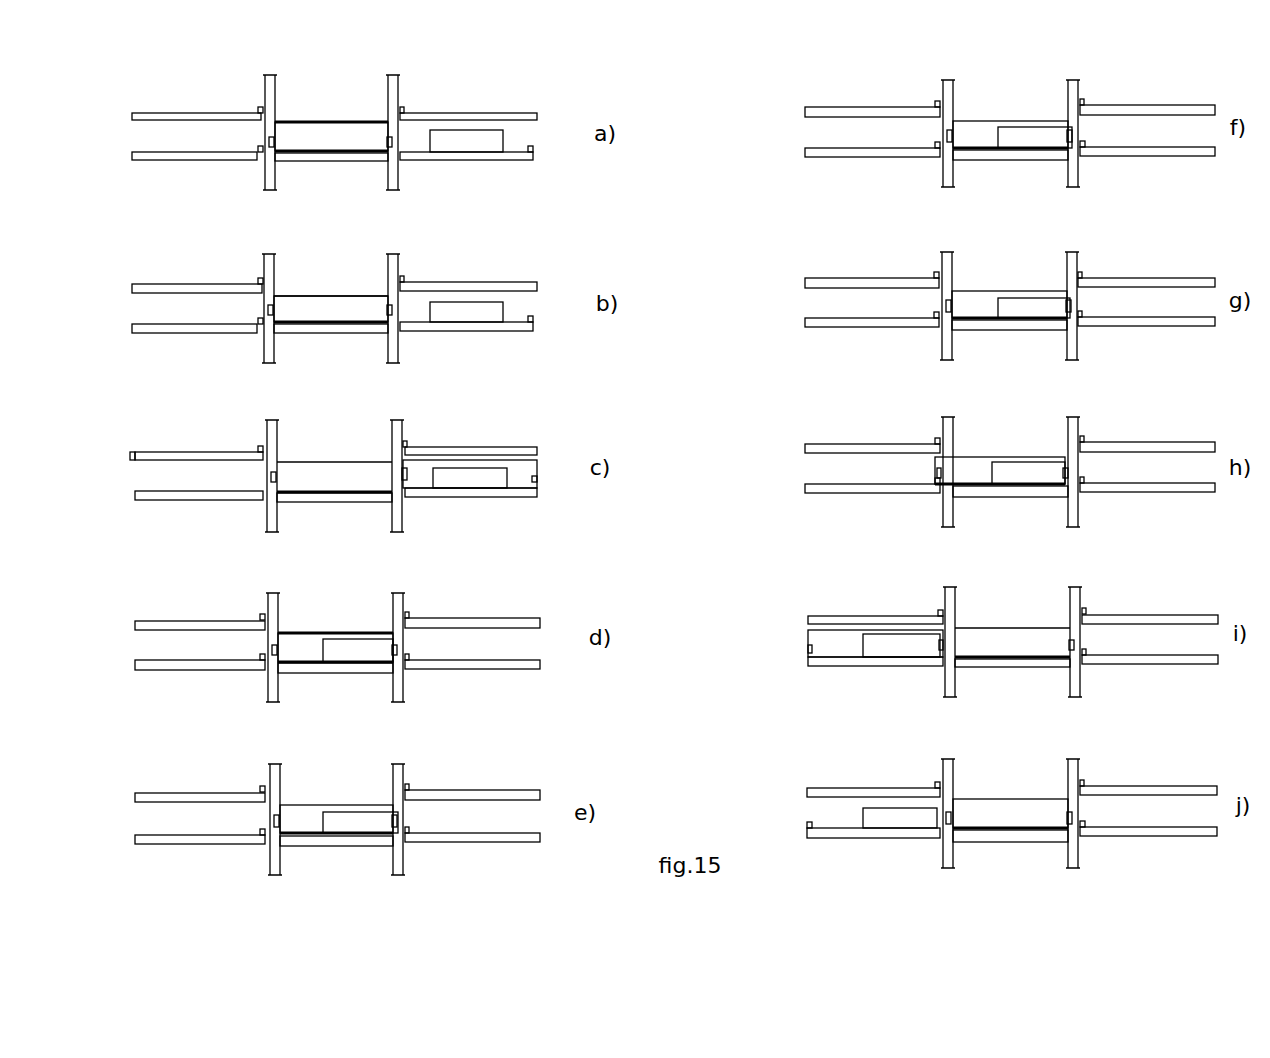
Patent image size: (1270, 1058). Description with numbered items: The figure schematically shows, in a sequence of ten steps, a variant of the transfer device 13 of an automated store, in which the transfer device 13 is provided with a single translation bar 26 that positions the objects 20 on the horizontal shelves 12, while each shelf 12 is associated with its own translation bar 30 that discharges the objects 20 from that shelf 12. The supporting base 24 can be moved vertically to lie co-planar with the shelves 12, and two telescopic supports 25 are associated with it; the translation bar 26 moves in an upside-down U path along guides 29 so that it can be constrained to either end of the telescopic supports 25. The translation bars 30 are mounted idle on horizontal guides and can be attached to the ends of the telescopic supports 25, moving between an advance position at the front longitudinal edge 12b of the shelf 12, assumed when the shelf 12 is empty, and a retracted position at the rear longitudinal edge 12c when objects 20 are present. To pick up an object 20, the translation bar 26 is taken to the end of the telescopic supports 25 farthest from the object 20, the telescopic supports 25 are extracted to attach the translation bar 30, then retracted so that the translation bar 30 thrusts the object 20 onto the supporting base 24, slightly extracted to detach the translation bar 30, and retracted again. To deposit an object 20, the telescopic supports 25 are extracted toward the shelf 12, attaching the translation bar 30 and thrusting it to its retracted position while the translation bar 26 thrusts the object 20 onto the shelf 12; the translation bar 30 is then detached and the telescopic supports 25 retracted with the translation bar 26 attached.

The horizontal shelf 12 is at (150, 114).
The front longitudinal edge 12b is at (259, 446).
The rear longitudinal edge 12c is at (532, 161).
The transfer device 13 is at (256, 170).
The object 20 is at (504, 142).
The supporting base 24 is at (302, 158).
The telescopic support 25 is at (378, 152).
The translation bar 26 is at (328, 122).
The guide 29 is at (292, 120).
The translation bar 30 is at (258, 106).